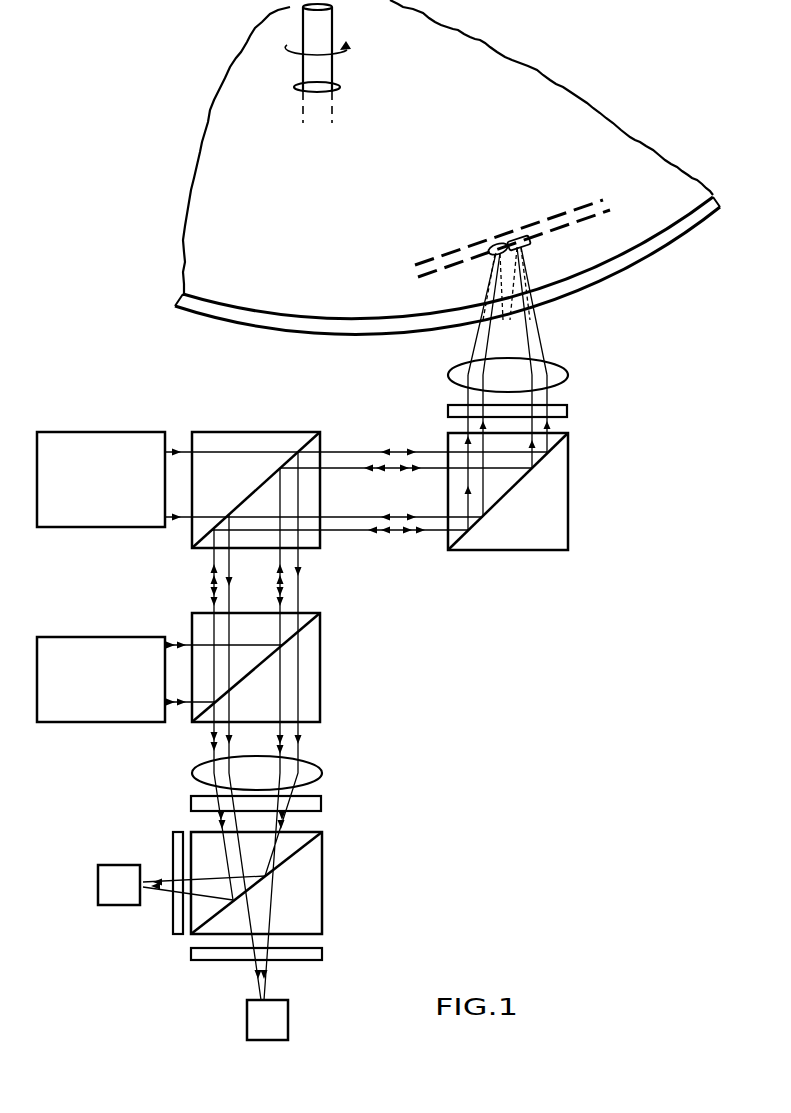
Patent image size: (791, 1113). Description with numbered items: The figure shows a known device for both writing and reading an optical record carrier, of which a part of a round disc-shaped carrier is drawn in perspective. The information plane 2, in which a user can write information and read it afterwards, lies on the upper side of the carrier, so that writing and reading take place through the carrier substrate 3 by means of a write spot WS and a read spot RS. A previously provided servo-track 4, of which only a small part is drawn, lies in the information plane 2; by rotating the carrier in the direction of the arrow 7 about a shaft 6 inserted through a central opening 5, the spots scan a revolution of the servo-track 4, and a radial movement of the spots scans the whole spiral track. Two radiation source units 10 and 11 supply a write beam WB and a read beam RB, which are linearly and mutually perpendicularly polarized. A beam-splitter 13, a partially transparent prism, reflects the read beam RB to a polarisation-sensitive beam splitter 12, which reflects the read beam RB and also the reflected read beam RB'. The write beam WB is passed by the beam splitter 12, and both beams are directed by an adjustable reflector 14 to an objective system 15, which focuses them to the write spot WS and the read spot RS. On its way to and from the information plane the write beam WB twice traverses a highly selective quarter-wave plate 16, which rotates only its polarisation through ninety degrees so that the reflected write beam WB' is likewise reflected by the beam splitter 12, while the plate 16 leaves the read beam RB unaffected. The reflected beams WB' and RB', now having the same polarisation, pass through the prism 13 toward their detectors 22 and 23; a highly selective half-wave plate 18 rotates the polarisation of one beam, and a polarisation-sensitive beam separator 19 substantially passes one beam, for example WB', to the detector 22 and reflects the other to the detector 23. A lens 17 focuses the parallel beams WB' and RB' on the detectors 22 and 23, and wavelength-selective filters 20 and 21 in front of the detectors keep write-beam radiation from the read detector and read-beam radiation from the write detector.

The information plane 2 is at (673, 213).
The carrier substrate 3 is at (607, 264).
The servo-track 4 is at (603, 208).
The central opening 5 is at (318, 97).
The shaft 6 is at (323, 18).
The arrow 7 is at (348, 51).
The radiation source unit 10 is at (88, 533).
The radiation source unit 11 is at (88, 723).
The polarisation-sensitive beam splitter 12 is at (268, 430).
The beam-splitter 13 is at (322, 658).
The reflector 14 is at (495, 552).
The objective system 15 is at (557, 377).
The λ/4 plate 16 is at (567, 412).
The lens 17 is at (322, 773).
The highly selective λ/2-plate 18 is at (322, 807).
The polarisation-sensitive beam separator 19 is at (323, 877).
The wavelength-selective filter 20 is at (323, 953).
The wavelength-selective filter 21 is at (178, 935).
The detector 22 is at (250, 1040).
The detector 23 is at (100, 905).
The read spot RS is at (495, 253).
The write spot WS is at (523, 246).
The write beam WB is at (338, 507).
The read beam RB is at (208, 701).
The reflected write beam WB' is at (295, 571).
The reflected read beam RB' is at (192, 586).